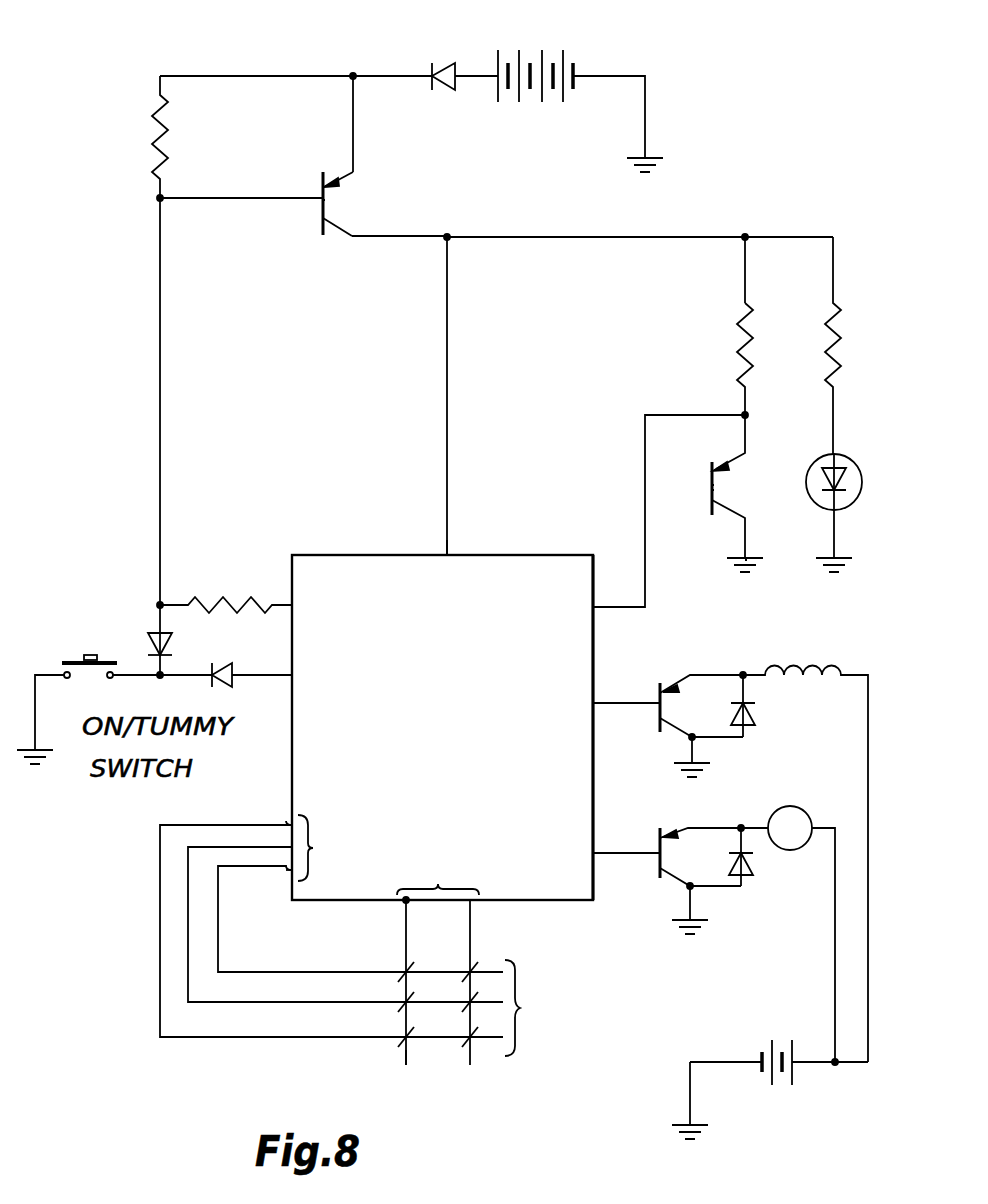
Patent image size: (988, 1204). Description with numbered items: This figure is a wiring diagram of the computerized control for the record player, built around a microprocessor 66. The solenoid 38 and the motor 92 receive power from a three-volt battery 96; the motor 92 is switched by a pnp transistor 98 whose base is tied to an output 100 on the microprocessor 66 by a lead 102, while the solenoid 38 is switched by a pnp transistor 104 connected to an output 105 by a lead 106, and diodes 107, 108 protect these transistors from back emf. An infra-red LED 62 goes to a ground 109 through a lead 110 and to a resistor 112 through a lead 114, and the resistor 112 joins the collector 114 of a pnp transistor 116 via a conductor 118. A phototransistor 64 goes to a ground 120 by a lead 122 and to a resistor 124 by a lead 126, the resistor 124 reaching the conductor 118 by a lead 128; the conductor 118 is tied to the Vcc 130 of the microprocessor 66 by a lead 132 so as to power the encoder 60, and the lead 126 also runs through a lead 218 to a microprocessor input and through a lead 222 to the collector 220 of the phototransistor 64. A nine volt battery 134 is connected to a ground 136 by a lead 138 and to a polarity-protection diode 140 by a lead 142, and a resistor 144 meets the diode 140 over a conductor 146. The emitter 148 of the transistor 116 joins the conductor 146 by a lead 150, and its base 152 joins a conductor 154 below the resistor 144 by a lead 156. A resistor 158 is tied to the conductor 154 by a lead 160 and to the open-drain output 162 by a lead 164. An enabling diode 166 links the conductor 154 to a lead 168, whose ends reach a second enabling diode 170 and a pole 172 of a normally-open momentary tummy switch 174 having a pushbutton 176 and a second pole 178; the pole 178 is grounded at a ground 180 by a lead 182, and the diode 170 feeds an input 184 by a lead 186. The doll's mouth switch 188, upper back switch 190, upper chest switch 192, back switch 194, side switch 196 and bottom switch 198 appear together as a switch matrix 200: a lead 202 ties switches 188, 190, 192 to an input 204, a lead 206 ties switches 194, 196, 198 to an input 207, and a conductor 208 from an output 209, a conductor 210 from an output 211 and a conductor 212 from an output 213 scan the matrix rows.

The solenoid 38 is at (822, 630).
The encoder 60 is at (769, 560).
The infra-red LED 62 is at (804, 480).
The phototransistor 64 is at (695, 492).
The microprocessor 66 is at (396, 550).
The motor 92 is at (803, 808).
The three-volt battery 96 is at (788, 1080).
The pnp transistor 98 is at (747, 810).
The output 100 is at (593, 845).
The lead 102 is at (606, 858).
The pnp transistor 104 is at (732, 638).
The output 105 is at (593, 718).
The lead 106 is at (634, 702).
The diode 107 is at (750, 857).
The diode 108 is at (755, 712).
The ground 109 is at (825, 574).
The lead 110 is at (825, 533).
The resistor 112 is at (829, 336).
The lead 114 is at (342, 233).
The pnp transistor 116 is at (300, 218).
The conductor 118 is at (600, 208).
The ground 120 is at (720, 581).
The lead 122 is at (745, 540).
The resistor 124 is at (736, 324).
The lead 126 is at (718, 388).
The lead 128 is at (742, 260).
The Vcc 130 is at (448, 560).
The lead 132 is at (455, 305).
The nine volt battery 134 is at (546, 43).
The ground 136 is at (654, 159).
The lead 138 is at (650, 112).
The polarity-protection diode 140 is at (450, 63).
The lead 142 is at (470, 81).
The resistor 144 is at (154, 150).
The conductor 146 is at (281, 50).
The emitter 148 is at (342, 185).
The lead 150 is at (354, 107).
The base 152 is at (318, 190).
The conductor 154 is at (166, 327).
The lead 156 is at (247, 168).
The resistor 158 is at (229, 605).
The lead 160 is at (173, 603).
The open-drain output 162 is at (290, 602).
The lead 164 is at (277, 604).
The enabling diode 166 is at (167, 651).
The lead 168 is at (139, 680).
The second enabling diode 170 is at (230, 687).
The pole 172 is at (70, 723).
The momentary switch 174 is at (70, 640).
The pushbutton 176 is at (97, 656).
The second pole 178 is at (62, 673).
The ground 180 is at (23, 762).
The lead 182 is at (38, 727).
The input 184 is at (299, 677).
The lead 186 is at (253, 674).
The mouth switch 188 is at (403, 972).
The upper back switch 190 is at (400, 1003).
The upper chest switch 192 is at (403, 1038).
The back switch 194 is at (463, 972).
The side switch 196 is at (473, 1008).
The bottom switch 198 is at (473, 1038).
The switch matrix 200 is at (416, 1059).
The lead 202 is at (406, 916).
The input 204 is at (395, 900).
The lead 206 is at (472, 923).
The input 207 is at (478, 897).
The conductor 208 is at (260, 971).
The output 209 is at (261, 895).
The conductor 210 is at (212, 1003).
The output 211 is at (290, 878).
The conductor 212 is at (197, 1037).
The output 213 is at (293, 822).
The lead 218 is at (628, 487).
The collector 220 is at (741, 488).
The lead 222 is at (741, 440).